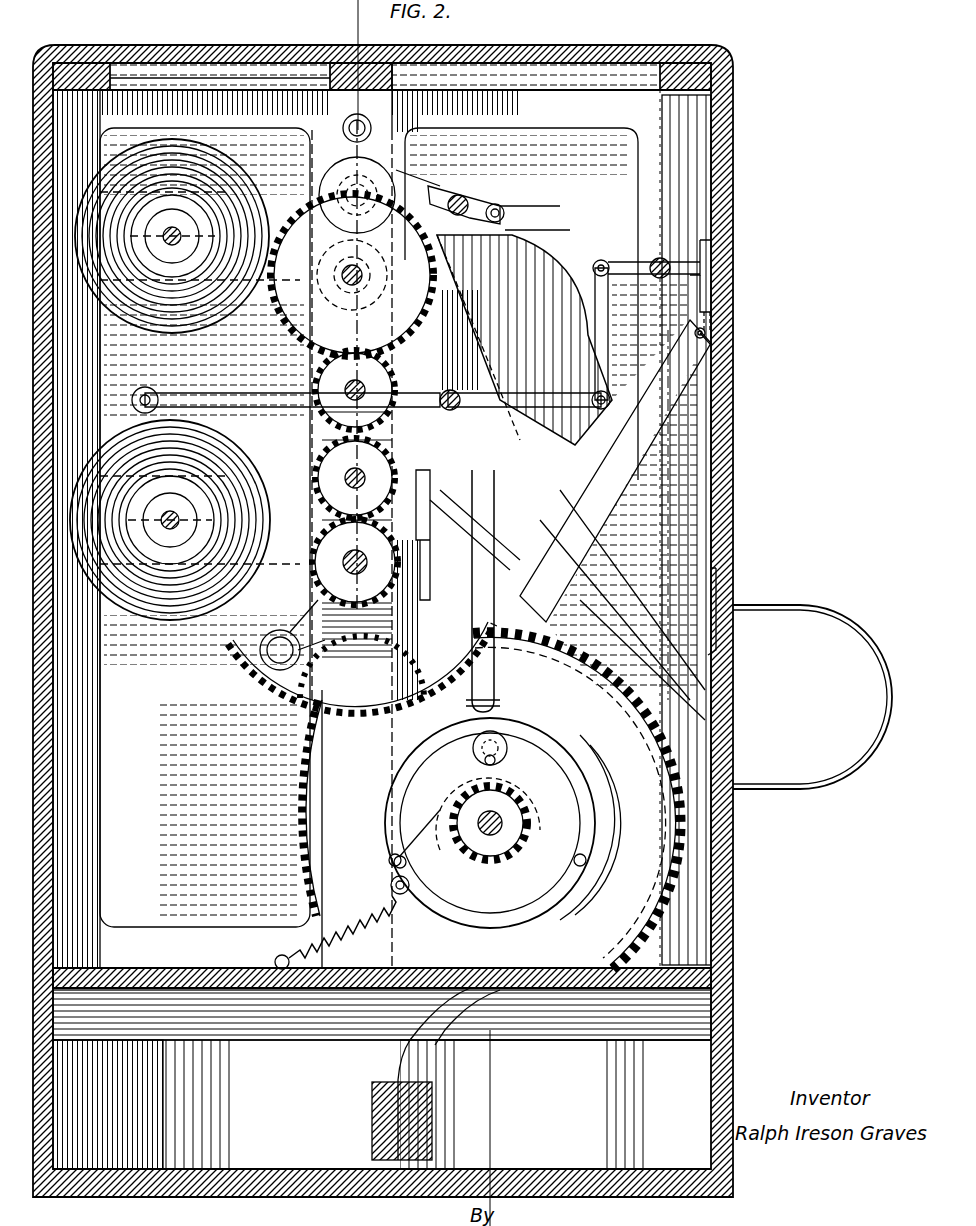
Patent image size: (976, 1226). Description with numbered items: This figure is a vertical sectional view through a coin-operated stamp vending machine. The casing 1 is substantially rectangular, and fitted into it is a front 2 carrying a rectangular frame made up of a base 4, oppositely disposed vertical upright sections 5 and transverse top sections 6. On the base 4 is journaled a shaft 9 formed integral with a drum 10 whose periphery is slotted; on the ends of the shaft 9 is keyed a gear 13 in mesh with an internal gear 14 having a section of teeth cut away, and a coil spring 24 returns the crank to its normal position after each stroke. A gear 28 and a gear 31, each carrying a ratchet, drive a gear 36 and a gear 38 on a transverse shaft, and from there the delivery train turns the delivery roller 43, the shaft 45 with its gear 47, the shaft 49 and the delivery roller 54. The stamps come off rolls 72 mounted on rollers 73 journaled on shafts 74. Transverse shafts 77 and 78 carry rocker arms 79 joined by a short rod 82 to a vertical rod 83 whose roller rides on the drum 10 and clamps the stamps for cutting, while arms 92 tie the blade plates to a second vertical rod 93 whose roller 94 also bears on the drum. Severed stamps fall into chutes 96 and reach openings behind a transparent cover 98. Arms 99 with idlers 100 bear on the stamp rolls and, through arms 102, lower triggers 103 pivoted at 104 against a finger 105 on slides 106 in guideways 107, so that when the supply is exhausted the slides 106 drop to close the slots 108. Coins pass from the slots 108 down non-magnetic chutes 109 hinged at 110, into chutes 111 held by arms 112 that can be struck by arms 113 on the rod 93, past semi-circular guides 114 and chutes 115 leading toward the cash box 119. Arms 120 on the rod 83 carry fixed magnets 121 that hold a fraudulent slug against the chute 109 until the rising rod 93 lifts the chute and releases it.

The casing 1 is at (276, 44).
The front 2 is at (742, 531).
The base 4 is at (180, 970).
The vertical upright sections 5 is at (548, 110).
The transverse top sections 6 is at (185, 70).
The shaft 9 is at (508, 800).
The drum 10 is at (560, 760).
The gear 13 is at (480, 870).
The internal gear 14 is at (392, 876).
The coil spring 24 is at (300, 936).
The gear 28 is at (300, 748).
The gear 31 is at (605, 790).
The gear 36 is at (258, 655).
The gear 38 is at (258, 672).
The delivery roller 43 is at (370, 278).
The shaft 45 is at (318, 394).
The gear 47 is at (378, 360).
The shaft 49 is at (335, 200).
The delivery roller 54 is at (535, 155).
The rolls of stamps 72 is at (240, 195).
The rollers 73 is at (200, 244).
The shafts 74 is at (171, 389).
The transverse shaft 77 is at (480, 188).
The transverse shaft 78 is at (470, 395).
The rocker arms 79 is at (505, 205).
The short rod 82 is at (508, 215).
The vertical rod 83 is at (530, 230).
The arms 92 is at (470, 343).
The vertical rod 93 is at (478, 500).
The roller 94 is at (470, 712).
The chutes 96 is at (555, 240).
The transparent cover 98 is at (835, 625).
The arms 99 is at (260, 404).
The idlers 100 is at (152, 398).
The arms 102 is at (598, 392).
The triggers 103 is at (628, 262).
The pivot 104 is at (660, 258).
The finger 105 is at (690, 255).
The slides 106 is at (710, 275).
The guideways 107 is at (712, 314).
The slots 108 is at (712, 330).
The chutes 109 is at (680, 392).
The hinge 110 is at (712, 348).
The chutes 111 is at (560, 680).
The arms 112 is at (540, 520).
The arms 113 is at (480, 530).
The semi-circular guides 114 is at (585, 750).
The chutes 115 is at (380, 1076).
The cash box 119 is at (555, 1104).
The arms 120 is at (580, 560).
The fixed magnets 121 is at (640, 530).